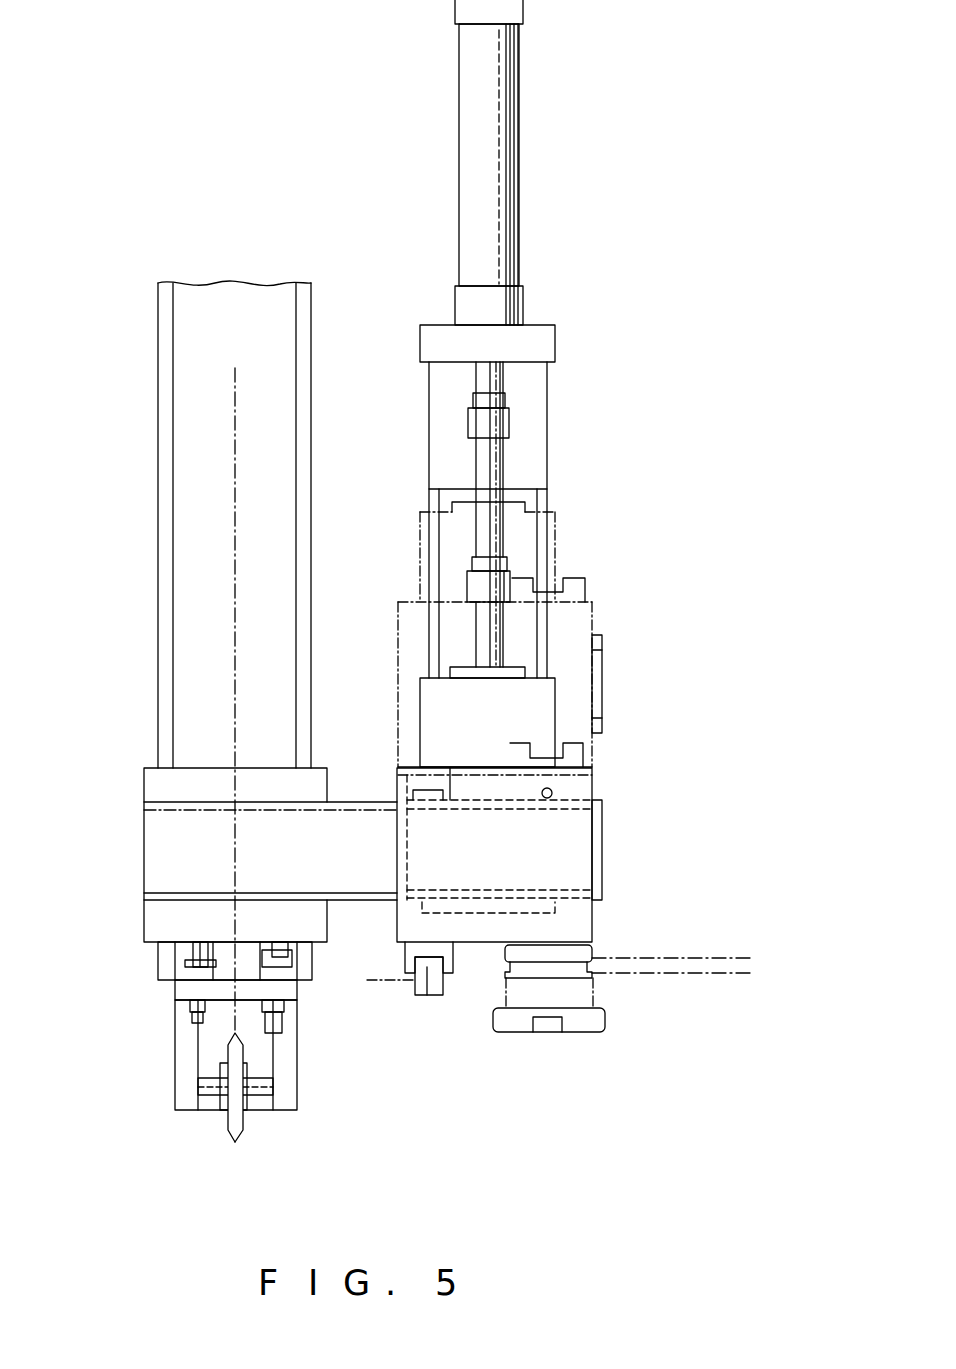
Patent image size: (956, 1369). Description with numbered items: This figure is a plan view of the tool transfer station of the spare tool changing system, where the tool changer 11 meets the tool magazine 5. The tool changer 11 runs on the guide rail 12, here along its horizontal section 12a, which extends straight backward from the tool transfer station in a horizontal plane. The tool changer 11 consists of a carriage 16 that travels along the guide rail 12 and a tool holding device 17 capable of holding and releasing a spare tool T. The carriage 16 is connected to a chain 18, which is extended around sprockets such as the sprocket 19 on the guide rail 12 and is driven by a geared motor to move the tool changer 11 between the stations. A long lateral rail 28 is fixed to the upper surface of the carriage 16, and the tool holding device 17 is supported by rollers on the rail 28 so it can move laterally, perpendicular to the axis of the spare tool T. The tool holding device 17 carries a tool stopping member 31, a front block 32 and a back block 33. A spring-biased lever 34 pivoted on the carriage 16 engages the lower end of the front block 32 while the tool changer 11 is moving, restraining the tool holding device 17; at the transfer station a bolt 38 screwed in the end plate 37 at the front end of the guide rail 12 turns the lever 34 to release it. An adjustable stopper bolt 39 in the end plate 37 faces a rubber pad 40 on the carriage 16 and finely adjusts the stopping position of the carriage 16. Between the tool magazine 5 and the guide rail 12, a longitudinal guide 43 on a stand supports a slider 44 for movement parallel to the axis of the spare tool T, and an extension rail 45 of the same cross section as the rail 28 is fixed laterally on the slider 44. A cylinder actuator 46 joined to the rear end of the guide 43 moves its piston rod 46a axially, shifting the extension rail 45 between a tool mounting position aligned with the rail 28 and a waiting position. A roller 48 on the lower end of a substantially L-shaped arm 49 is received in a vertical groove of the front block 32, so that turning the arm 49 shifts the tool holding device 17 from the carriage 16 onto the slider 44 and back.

The tool magazine 5 is at (720, 972).
The tool changer 11 is at (122, 855).
The guide rail 12 is at (158, 405).
The horizontal section 12a is at (305, 418).
The carriage 16 is at (158, 790).
The tool holding device 17 is at (592, 604).
The chain 18 is at (232, 530).
The sprocket 19 is at (243, 1130).
The rail 28 is at (363, 817).
The tool stopping member 31 is at (553, 792).
The front block 32 is at (455, 962).
The back block 33 is at (577, 753).
The lever 34 is at (195, 957).
The end plate 37 is at (180, 990).
The bolt 38 is at (195, 1022).
The stopper bolt 39 is at (295, 1035).
The rubber pad 40 is at (292, 950).
The guide 43 is at (545, 545).
The slider 44 is at (425, 535).
The extension rail 45 is at (600, 678).
The cylinder actuator 46 is at (520, 140).
The piston rod 46a is at (490, 455).
The roller 48 is at (423, 975).
The arm 49 is at (375, 990).
The spare tool T is at (600, 1025).